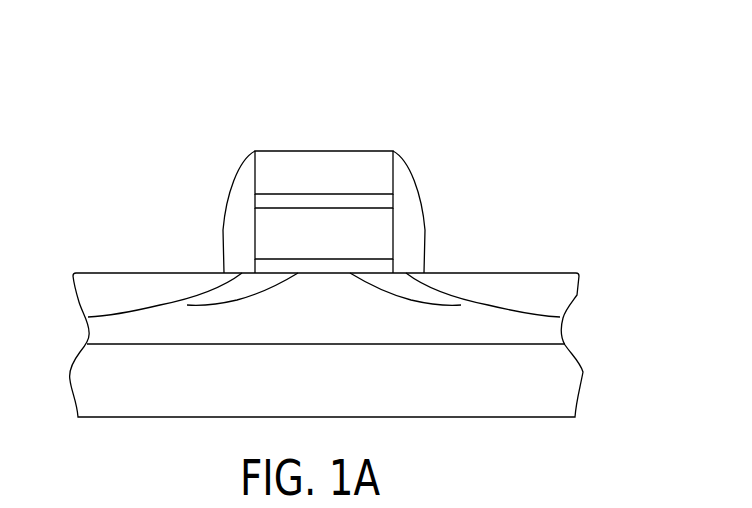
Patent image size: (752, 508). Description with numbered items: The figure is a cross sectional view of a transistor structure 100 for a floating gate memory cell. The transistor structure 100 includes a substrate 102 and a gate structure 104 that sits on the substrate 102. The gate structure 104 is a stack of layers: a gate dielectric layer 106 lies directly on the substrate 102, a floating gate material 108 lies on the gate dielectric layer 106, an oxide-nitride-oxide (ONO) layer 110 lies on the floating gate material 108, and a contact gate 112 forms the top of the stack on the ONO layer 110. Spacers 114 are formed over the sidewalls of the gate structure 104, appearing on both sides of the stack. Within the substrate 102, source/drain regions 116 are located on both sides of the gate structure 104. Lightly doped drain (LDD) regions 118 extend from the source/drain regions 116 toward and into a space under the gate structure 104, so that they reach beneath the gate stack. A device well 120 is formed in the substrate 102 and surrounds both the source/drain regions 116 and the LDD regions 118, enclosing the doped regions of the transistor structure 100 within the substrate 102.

The transistor structure 100 is at (600, 85).
The substrate 102 is at (578, 372).
The gate structure 104 is at (328, 117).
The gate dielectric layer 106 is at (390, 265).
The floating gate material 108 is at (390, 232).
The oxide-nitride-oxide (ONO) layer 110 is at (388, 202).
The contact gate 112 is at (377, 160).
The spacers 114 is at (230, 227).
The source/drain regions 116 is at (82, 295).
The lightly doped drain (LDD) regions 118 is at (233, 294).
The device well 120 is at (553, 335).